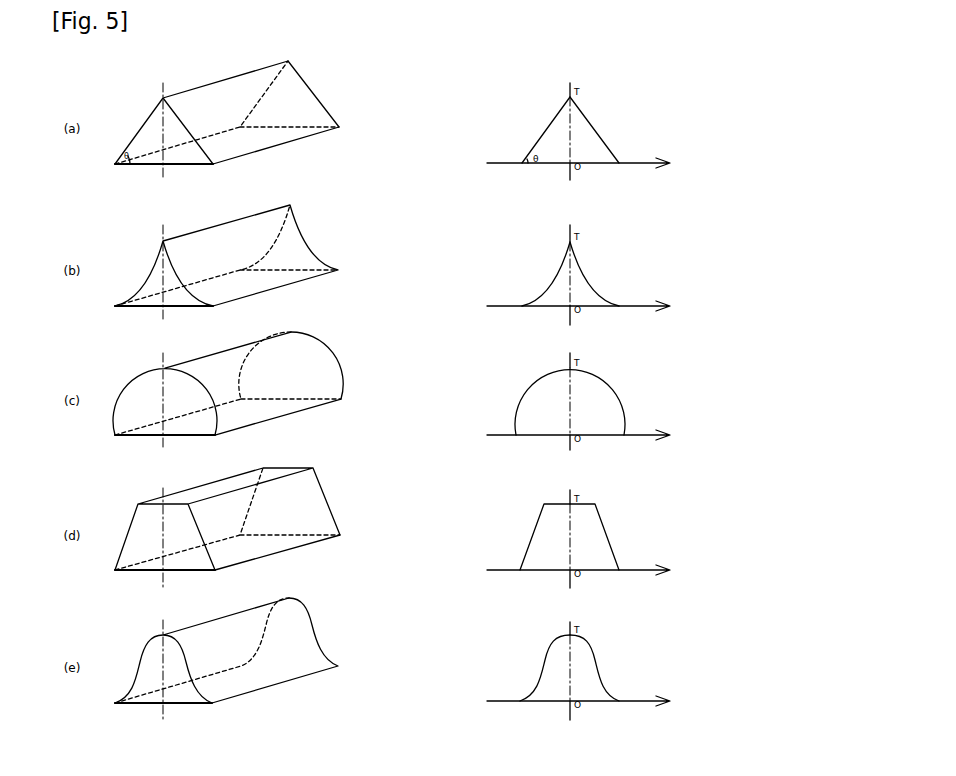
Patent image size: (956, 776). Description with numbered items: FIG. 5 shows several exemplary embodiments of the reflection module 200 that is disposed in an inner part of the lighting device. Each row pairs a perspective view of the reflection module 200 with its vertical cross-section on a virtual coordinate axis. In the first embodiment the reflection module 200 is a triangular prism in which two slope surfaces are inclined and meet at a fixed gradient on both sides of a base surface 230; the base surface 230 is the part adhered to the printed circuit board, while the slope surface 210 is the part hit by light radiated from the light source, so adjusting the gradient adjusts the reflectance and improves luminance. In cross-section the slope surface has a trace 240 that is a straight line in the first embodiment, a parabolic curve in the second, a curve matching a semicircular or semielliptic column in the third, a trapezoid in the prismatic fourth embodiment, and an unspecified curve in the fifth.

The reflection module 200 is at (110, 58).
The slope surface 210 is at (308, 100).
The base surface 230 is at (182, 155).
The trace of the slope surface 240 is at (597, 128).